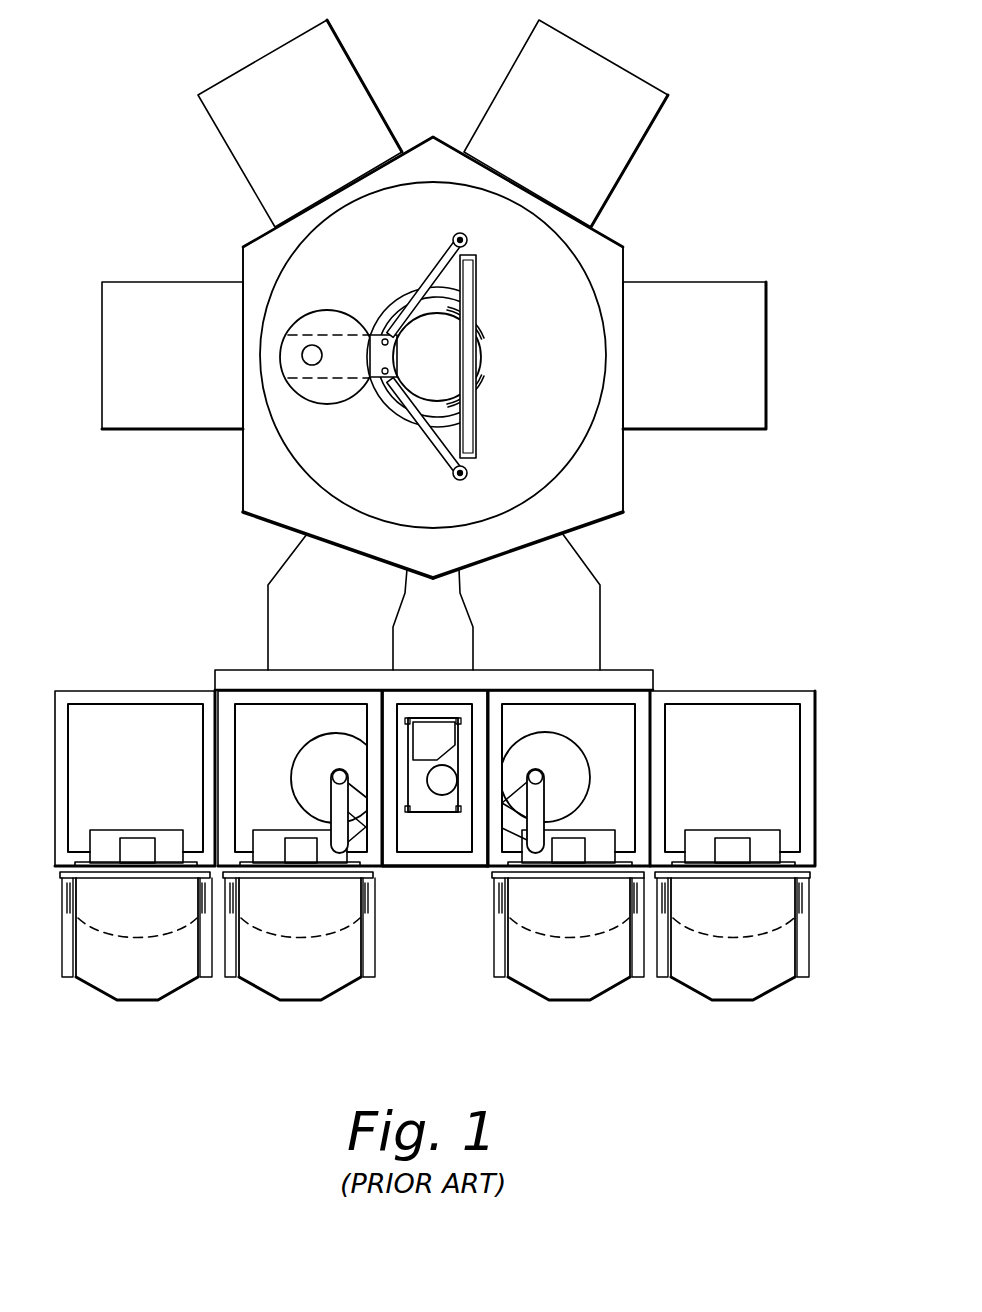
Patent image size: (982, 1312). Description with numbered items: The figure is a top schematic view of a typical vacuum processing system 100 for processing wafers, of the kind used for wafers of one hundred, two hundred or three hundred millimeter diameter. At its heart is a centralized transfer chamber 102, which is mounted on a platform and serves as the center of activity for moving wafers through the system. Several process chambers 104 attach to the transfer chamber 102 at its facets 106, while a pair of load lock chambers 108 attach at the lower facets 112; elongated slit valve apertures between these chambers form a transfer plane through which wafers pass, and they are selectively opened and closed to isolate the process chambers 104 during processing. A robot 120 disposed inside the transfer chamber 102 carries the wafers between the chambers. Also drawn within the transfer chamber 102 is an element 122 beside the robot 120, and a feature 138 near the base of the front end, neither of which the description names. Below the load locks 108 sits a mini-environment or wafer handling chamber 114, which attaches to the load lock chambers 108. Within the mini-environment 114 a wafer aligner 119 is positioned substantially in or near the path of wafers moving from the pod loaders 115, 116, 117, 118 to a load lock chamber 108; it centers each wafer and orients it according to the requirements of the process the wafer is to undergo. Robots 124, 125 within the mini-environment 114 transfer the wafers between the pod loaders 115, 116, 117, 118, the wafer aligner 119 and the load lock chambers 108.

The vacuum processing system 100 is at (762, 147).
The transfer chamber 102 is at (615, 481).
The process chambers 104 is at (258, 56).
The facets 106 is at (257, 235).
The load lock chambers 108 is at (267, 606).
The facets 112 is at (266, 521).
The wafer handling chamber 114 is at (733, 690).
The pod loader 115 is at (730, 1002).
The pod loader 116 is at (568, 1002).
The pod loader 117 is at (298, 1002).
The pod loader 118 is at (140, 1002).
The wafer aligner 119 is at (435, 812).
The robot 120 is at (500, 350).
The transfer port assembly 122 is at (318, 310).
The robot 124 is at (525, 730).
The robot 125 is at (343, 733).
The cabinet base 138 is at (462, 868).